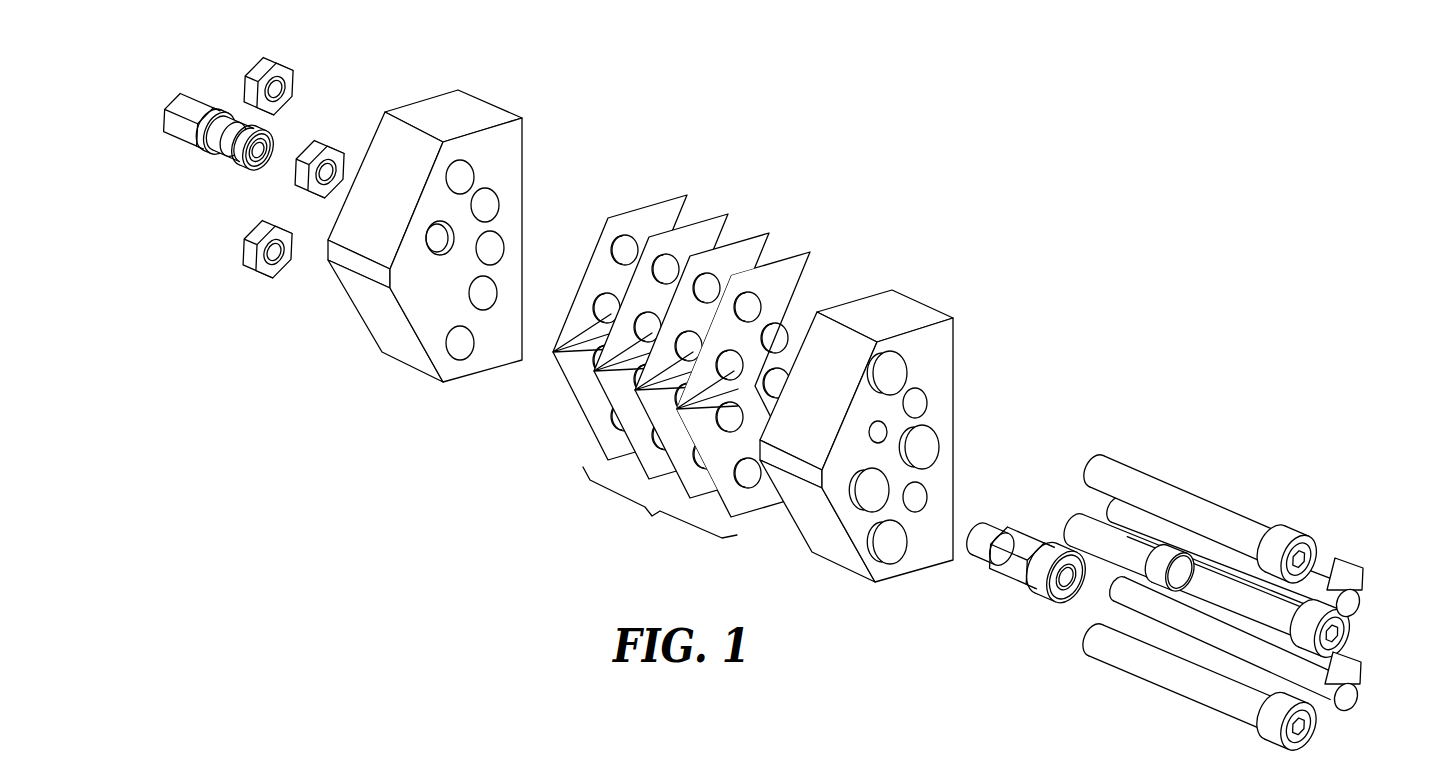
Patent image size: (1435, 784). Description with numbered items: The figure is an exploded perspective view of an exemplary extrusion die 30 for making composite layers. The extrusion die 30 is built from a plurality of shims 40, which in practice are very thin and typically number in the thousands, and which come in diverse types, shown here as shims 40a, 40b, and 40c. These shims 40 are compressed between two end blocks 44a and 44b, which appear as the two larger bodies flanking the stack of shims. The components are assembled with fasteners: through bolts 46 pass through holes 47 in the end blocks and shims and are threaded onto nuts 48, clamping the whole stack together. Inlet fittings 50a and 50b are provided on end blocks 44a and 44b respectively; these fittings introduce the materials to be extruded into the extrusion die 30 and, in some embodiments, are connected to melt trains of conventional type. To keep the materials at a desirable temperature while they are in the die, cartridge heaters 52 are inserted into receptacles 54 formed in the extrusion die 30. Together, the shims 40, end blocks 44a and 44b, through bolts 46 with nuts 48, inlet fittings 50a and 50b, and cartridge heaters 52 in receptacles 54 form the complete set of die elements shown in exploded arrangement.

The extrusion die 30 is at (968, 157).
The shims 40 is at (660, 507).
The shim 40a is at (652, 213).
The shim 40b is at (755, 240).
The shim 40c is at (712, 223).
The end block 44a is at (467, 102).
The end block 44b is at (884, 410).
The through bolts 46 is at (1216, 518).
The holes 47 is at (904, 366).
The nuts 48 is at (318, 142).
The inlet fitting 50a is at (187, 108).
The inlet fitting 50b is at (1030, 594).
The cartridge heaters 52 is at (1357, 607).
The receptacles 54 is at (921, 398).